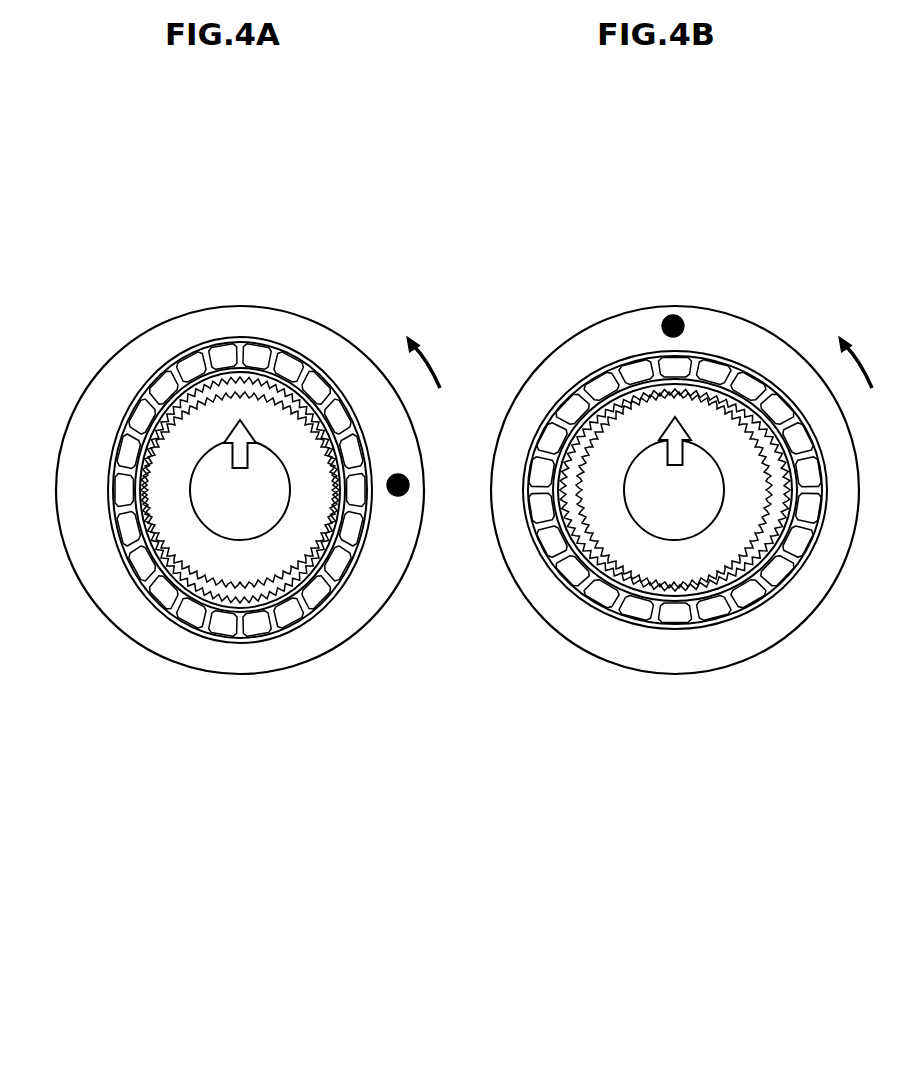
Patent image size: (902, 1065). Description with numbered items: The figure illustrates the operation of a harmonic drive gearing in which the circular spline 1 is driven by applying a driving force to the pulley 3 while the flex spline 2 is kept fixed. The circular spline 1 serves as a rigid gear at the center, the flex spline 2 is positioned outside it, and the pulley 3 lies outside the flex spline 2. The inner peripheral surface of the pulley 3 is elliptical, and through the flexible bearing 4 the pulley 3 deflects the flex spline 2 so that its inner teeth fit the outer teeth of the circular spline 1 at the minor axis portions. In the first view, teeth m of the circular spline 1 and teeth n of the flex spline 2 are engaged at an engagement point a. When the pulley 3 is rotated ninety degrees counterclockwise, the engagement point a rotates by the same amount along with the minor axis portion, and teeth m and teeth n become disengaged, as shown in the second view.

In FIG. 4A, the circular spline 1 is at (229, 578).
In FIG. 4B, the circular spline 1 is at (739, 605).
In FIG. 4A, the flex spline 2 is at (232, 368).
In FIG. 4B, the flex spline 2 is at (565, 535).
In FIG. 4A, the pulley 3 is at (317, 331).
In FIG. 4B, the pulley 3 is at (750, 333).
In FIG. 4A, the flexible bearing 4 is at (333, 588).
In FIG. 4B, the flexible bearing 4 is at (648, 367).
In FIG. 4A, the engagement point a is at (397, 496).
In FIG. 4B, the engagement point a is at (678, 315).
In FIG. 4A, the teeth of the circular spline m is at (352, 485).
In FIG. 4B, the teeth of the circular spline m is at (773, 492).
In FIG. 4A, the teeth of the flex spline n is at (340, 508).
In FIG. 4B, the teeth of the flex spline n is at (799, 485).